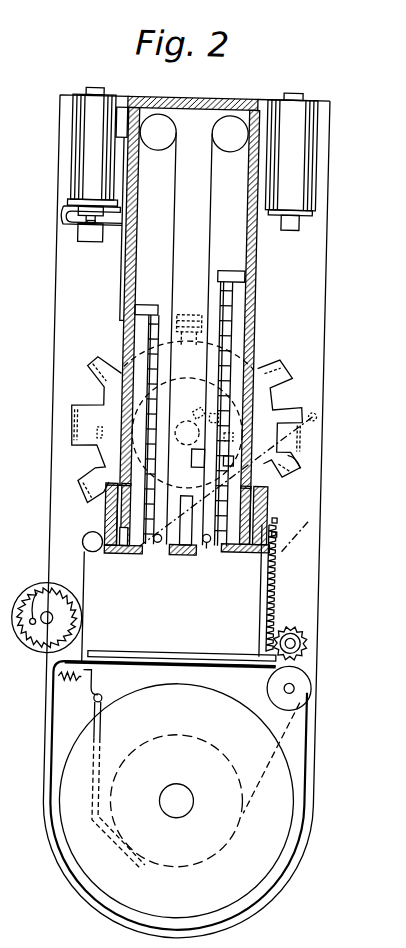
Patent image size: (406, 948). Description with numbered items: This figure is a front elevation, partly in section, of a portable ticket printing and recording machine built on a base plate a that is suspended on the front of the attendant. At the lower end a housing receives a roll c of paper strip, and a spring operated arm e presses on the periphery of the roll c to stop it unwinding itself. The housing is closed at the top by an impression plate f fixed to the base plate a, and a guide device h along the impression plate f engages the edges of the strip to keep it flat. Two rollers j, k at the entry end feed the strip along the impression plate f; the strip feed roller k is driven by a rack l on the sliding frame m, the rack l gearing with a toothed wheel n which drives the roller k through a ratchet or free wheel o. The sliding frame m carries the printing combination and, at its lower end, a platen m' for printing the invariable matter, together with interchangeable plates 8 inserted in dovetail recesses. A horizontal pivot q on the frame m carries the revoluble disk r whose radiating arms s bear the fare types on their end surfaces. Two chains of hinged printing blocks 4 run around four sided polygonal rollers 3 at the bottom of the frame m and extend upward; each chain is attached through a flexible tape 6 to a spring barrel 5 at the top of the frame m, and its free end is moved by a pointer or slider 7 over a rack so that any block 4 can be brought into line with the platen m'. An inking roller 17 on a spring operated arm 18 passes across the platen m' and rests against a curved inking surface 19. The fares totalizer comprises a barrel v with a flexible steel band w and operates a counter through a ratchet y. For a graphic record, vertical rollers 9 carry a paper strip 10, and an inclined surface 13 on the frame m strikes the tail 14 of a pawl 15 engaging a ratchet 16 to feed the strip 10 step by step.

The base plate a is at (60, 350).
The impression plate f is at (232, 695).
The paper strip 10 is at (125, 202).
The inclined surface 13 is at (113, 107).
The spring barrels 5 is at (156, 152).
The flexible tapes 6 is at (204, 230).
The vertical rollers 9 is at (65, 160).
The ratchet 16 is at (68, 200).
The pawl 15 is at (72, 213).
The tail of the pawl 14 is at (103, 240).
The pointer or slider 7 is at (143, 303).
The horizontal pivot q is at (254, 358).
The polygonal roller 3 is at (178, 552).
The sliding frame m is at (204, 419).
The printing plate or platen m' is at (228, 567).
The revoluble disk or wheel r is at (70, 407).
The arms or projections s is at (299, 466).
The spring operated arm 18 is at (311, 410).
The curved inking surface 19 is at (318, 537).
The printing blocks 4 is at (110, 462).
The inking roller 17 is at (115, 562).
The flexible steel band w is at (89, 594).
The barrel v is at (38, 594).
The ratchet y is at (80, 619).
The guide device h is at (124, 662).
The interchangeable plates 8 is at (279, 565).
The rack l is at (279, 601).
The ratchet or free wheel o is at (311, 630).
The toothed wheel n is at (296, 626).
The strip feed roller k is at (323, 665).
The roller j is at (302, 701).
The spring operated arm e is at (98, 710).
The roll of paper strip c is at (124, 791).